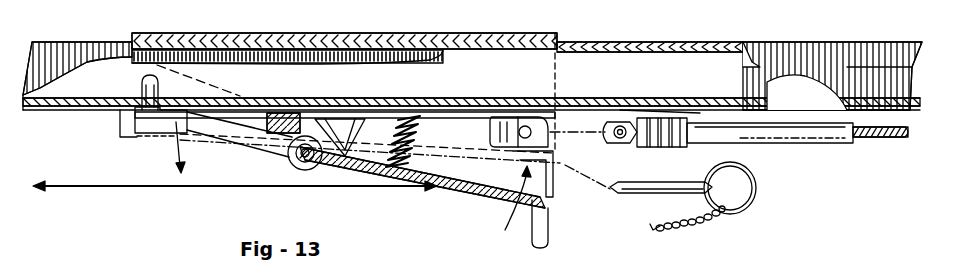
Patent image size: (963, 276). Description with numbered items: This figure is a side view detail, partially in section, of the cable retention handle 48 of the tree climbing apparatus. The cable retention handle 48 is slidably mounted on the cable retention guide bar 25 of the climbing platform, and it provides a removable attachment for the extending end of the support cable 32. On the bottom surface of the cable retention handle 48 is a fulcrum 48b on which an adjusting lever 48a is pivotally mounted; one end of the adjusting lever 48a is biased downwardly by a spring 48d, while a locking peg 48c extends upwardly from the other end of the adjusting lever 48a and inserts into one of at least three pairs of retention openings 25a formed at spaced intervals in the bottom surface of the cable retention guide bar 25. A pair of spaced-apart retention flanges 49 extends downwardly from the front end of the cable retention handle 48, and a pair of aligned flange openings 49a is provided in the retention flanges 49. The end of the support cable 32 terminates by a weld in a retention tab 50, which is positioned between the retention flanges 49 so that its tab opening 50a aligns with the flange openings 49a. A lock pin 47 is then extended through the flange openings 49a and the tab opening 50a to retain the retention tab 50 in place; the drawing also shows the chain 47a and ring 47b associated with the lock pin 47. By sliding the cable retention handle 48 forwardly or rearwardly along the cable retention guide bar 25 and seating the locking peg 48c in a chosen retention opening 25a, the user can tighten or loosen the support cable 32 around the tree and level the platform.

The cable retention guide bar 25 is at (683, 50).
The retention openings 25a is at (286, 76).
The support cable 32 is at (870, 136).
The lock pin 47 is at (618, 194).
The pin chain 47a is at (702, 224).
The pin ring 47b is at (756, 188).
The cable retention handle 48 is at (557, 35).
The adjusting lever 48a is at (490, 190).
The fulcrum 48b is at (340, 150).
The locking peg 48c is at (142, 90).
The spring 48d is at (410, 116).
The retention flanges 49 is at (530, 115).
The flange openings 49a is at (535, 140).
The retention tab 50 is at (622, 145).
The tab opening 50a is at (623, 130).